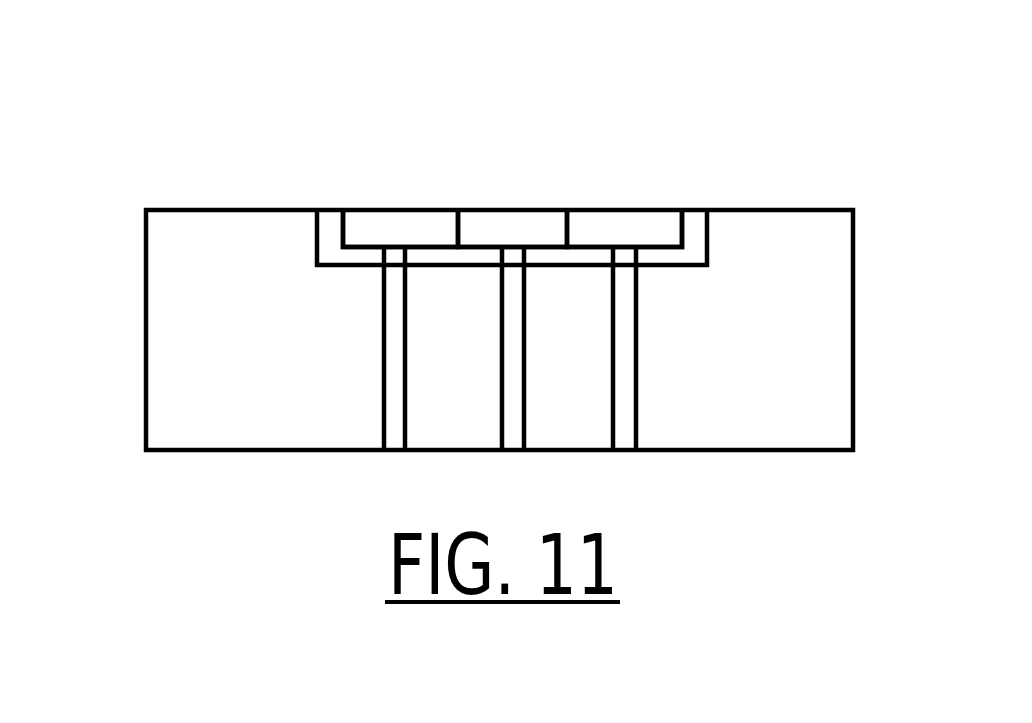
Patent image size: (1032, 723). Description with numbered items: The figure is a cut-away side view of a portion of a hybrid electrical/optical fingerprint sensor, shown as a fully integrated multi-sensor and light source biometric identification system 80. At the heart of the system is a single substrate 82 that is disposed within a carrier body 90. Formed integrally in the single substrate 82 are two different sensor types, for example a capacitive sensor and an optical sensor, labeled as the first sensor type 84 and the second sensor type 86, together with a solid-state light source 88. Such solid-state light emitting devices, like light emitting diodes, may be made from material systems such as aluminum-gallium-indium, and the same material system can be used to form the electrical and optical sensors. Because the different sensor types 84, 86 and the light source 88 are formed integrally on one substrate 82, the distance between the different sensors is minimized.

The multi-sensor and light source biometric identification system 80 is at (165, 145).
The single substrate 82 is at (315, 238).
The first sensor type 84 is at (383, 213).
The second sensor type 86 is at (505, 211).
The solid-state light source 88 is at (628, 211).
The carrier body 90 is at (828, 327).